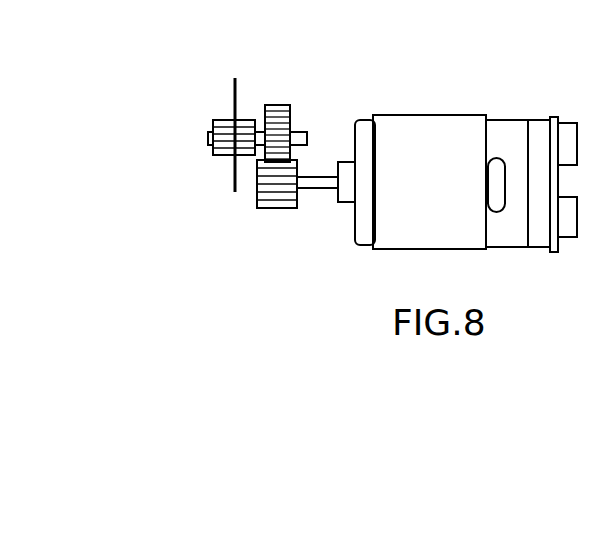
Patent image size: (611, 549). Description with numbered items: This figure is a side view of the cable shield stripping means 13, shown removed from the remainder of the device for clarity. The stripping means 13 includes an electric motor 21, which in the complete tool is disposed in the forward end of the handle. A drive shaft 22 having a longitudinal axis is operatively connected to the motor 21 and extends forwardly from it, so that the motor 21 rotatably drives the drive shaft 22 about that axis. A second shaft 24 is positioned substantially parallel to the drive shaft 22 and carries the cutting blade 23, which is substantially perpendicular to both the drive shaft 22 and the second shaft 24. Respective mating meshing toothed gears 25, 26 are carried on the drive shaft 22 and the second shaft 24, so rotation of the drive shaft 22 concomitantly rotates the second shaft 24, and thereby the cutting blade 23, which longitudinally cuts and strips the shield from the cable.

The cable shield stripping means 13 is at (488, 78).
The electric motor 21 is at (410, 127).
The drive shaft 22 is at (312, 190).
The cutting blade 23 is at (233, 94).
The second shaft 24 is at (300, 125).
The toothed gear 25 is at (267, 208).
The toothed gear 26 is at (275, 107).